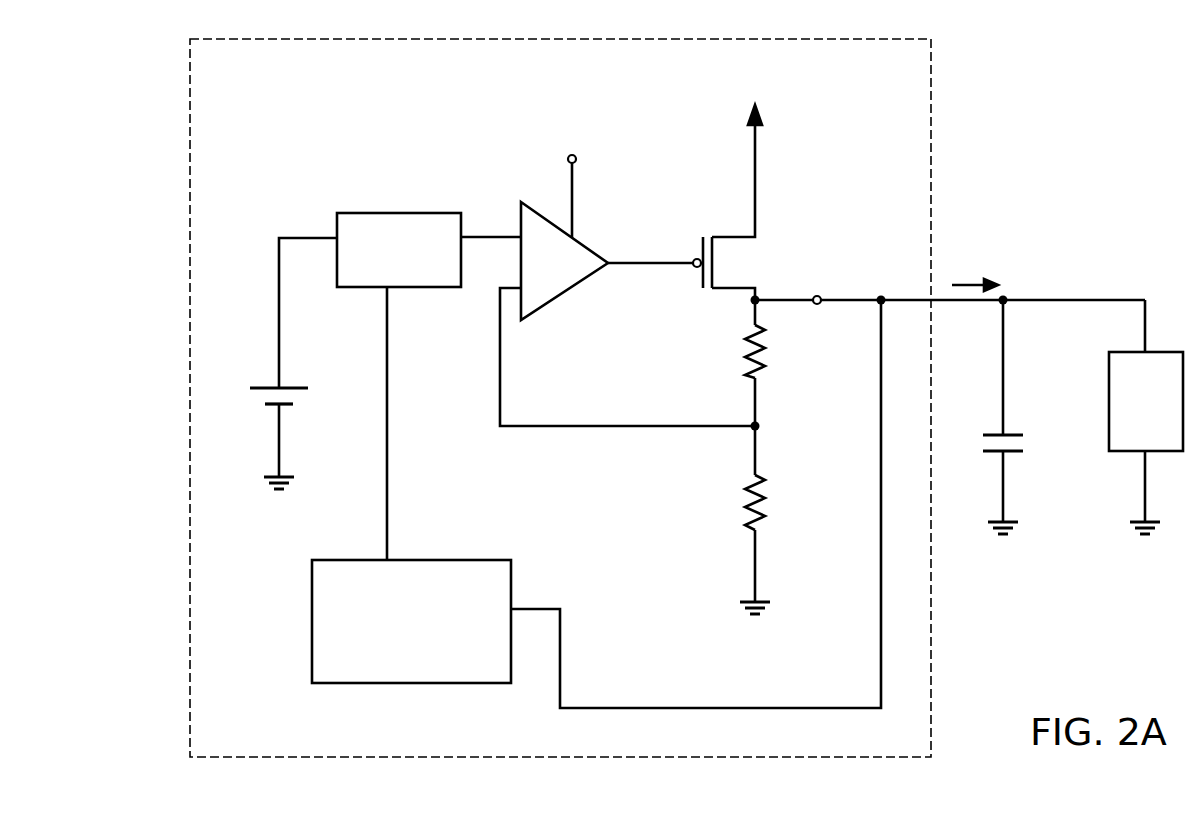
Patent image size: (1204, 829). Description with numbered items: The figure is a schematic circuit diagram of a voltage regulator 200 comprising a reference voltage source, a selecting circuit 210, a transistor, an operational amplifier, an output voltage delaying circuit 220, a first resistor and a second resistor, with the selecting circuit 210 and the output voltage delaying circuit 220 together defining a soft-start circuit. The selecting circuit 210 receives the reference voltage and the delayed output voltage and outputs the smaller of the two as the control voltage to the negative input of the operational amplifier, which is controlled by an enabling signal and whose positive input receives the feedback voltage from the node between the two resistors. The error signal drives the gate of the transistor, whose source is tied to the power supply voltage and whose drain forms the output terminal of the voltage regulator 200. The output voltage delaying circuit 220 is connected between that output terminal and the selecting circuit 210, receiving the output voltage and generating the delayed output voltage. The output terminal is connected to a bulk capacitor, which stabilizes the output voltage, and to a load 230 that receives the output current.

The voltage regulator 200 is at (258, 76).
The selecting circuit 210 is at (402, 213).
The output voltage delaying circuit 220 is at (314, 607).
The load 230 is at (1119, 352).